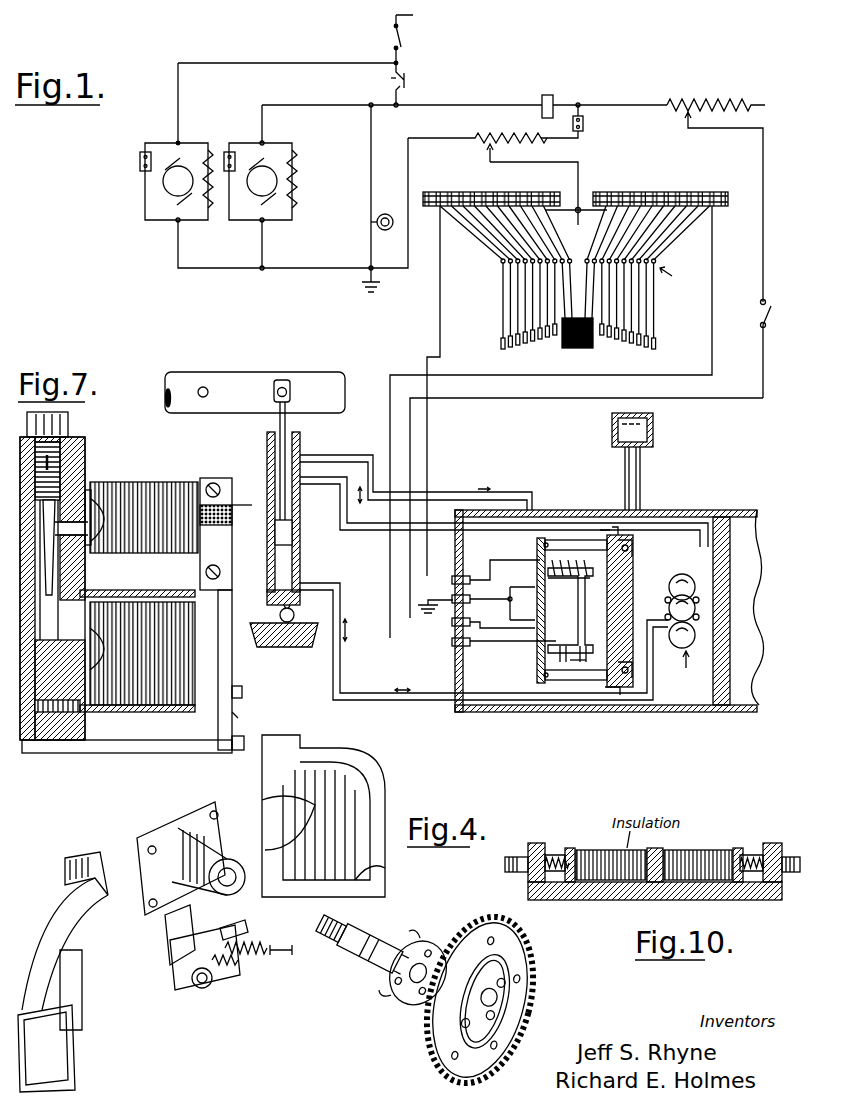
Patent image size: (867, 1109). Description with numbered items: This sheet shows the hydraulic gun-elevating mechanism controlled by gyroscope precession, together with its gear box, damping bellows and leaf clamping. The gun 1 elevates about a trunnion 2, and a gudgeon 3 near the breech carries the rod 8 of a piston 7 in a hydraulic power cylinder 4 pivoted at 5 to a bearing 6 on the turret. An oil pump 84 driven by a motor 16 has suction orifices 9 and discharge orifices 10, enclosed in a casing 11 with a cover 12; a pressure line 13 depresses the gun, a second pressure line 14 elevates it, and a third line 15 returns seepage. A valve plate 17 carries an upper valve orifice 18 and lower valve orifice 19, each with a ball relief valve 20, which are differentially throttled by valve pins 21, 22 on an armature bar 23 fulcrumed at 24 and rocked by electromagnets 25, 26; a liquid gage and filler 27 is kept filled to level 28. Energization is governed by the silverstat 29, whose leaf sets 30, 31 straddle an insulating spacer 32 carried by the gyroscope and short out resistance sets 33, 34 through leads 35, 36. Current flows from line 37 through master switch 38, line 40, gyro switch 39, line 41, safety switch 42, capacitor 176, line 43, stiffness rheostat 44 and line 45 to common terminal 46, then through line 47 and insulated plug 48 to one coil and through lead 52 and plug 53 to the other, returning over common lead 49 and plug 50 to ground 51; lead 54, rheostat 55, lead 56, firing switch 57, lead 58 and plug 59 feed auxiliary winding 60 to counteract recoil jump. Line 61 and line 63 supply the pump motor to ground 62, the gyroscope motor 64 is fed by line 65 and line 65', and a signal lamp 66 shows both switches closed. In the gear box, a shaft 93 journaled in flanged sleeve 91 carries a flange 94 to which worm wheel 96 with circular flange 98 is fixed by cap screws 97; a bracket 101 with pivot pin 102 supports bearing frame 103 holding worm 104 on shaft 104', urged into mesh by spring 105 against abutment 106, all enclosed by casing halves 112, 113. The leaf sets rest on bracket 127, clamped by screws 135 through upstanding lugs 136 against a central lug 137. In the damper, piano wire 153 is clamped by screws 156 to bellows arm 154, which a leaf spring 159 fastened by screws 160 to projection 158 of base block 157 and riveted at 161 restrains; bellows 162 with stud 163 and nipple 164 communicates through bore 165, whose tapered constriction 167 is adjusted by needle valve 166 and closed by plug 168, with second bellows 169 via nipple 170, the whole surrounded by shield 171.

In FIG. 1, the gun 1 is at (250, 373).
In FIG. 1, the trunnion 2 is at (208, 392).
In FIG. 1, the gudgeon 3 is at (290, 392).
In FIG. 1, the hydraulic power cylinder 4 is at (302, 566).
In FIG. 1, the pivot 5 is at (295, 613).
In FIG. 1, the bearing 6 is at (268, 634).
In FIG. 1, the piston 7 is at (293, 531).
In FIG. 1, the rod 8 is at (278, 421).
In FIG. 1, the suction orifices 9 is at (672, 585).
In FIG. 1, the discharge orifices 10 is at (670, 606).
In FIG. 1, the casing 11 is at (651, 716).
In FIG. 1, the cover 12 is at (455, 668).
In FIG. 1, the pressure line 13 is at (428, 698).
In FIG. 1, the second pressure line 14 is at (348, 532).
In FIG. 1, the third line 15 is at (449, 498).
In FIG. 1, the motor 16 is at (170, 185).
In FIG. 1, the valve plate 17 is at (634, 563).
In FIG. 1, the upper valve orifice 18 is at (622, 545).
In FIG. 1, the lower valve orifice 19 is at (615, 688).
In FIG. 1, the ball relief valve 20 is at (629, 547).
In FIG. 1, the valve pin 21 is at (572, 538).
In FIG. 1, the valve pin 22 is at (540, 679).
In FIG. 1, the armature bar 23 is at (537, 545).
In FIG. 1, the fulcrum 24 is at (545, 615).
In FIG. 1, the electromagnet 25 is at (545, 568).
In FIG. 1, the electromagnet 26 is at (555, 655).
In FIG. 1, the liquid gage and filler 27 is at (605, 435).
In FIG. 1, the liquid level 28 is at (650, 424).
In FIG. 1, the silverstat 29 is at (677, 279).
In FIG. 1, the leaves 30 is at (517, 293).
In FIG. 4, the leaves 30 is at (715, 848).
In FIG. 1, the leaves 31 is at (638, 323).
In FIG. 4, the leaves 31 is at (591, 848).
In FIG. 1, the insulating spacer 32 is at (573, 349).
In FIG. 1, the resistance set 33 is at (479, 182).
In FIG. 1, the resistance set 34 is at (650, 186).
In FIG. 1, the leads 35 is at (483, 233).
In FIG. 1, the leads 36 is at (660, 235).
In FIG. 1, the line 37 is at (413, 15).
In FIG. 1, the master switch 38 is at (393, 42).
In FIG. 1, the gyro switch 39 is at (407, 78).
In FIG. 1, the line 40 is at (393, 74).
In FIG. 1, the line 41 is at (484, 105).
In FIG. 1, the safety switch 42 is at (548, 95).
In FIG. 1, the line 43 is at (549, 140).
In FIG. 1, the stiffness control rheostat 44 is at (500, 135).
In FIG. 1, the line 45 is at (580, 173).
In FIG. 1, the common terminal 46 is at (576, 225).
In FIG. 1, the line 47 is at (438, 331).
In FIG. 1, the insulated plug 48 is at (453, 577).
In FIG. 1, the common lead 49 is at (490, 598).
In FIG. 1, the plug 50 is at (466, 602).
In FIG. 1, the ground 51 is at (435, 598).
In FIG. 1, the lead 52 is at (714, 357).
In FIG. 1, the plug 53 is at (466, 645).
In FIG. 1, the lead 54 is at (634, 105).
In FIG. 1, the adjustable rheostat 55 is at (707, 100).
In FIG. 1, the lead 56 is at (762, 244).
In FIG. 1, the switch 57 is at (771, 294).
In FIG. 1, the lead 58 is at (478, 398).
In FIG. 1, the plug 59 is at (453, 625).
In FIG. 1, the auxiliary winding 60 is at (578, 662).
In FIG. 1, the line 61 is at (203, 65).
In FIG. 1, the ground connection 62 is at (362, 287).
In FIG. 1, the line 63 is at (217, 268).
In FIG. 1, the gyroscope motor 64 is at (254, 185).
In FIG. 1, the line 65 is at (330, 111).
In FIG. 1, the line 65' is at (279, 244).
In FIG. 1, the signal lamp 66 is at (382, 212).
In FIG. 1, the oil pump 84 is at (696, 667).
In FIG. 10, the flanged sleeve 91 is at (192, 870).
In FIG. 10, the shaft 93 is at (360, 940).
In FIG. 10, the flange 94 is at (405, 993).
In FIG. 10, the worm wheel 96 is at (422, 1056).
In FIG. 10, the cap screws 97 is at (505, 1013).
In FIG. 10, the circular flange 98 is at (485, 1062).
In FIG. 10, the bracket 101 is at (192, 942).
In FIG. 10, the pivot pin 102 is at (177, 973).
In FIG. 10, the bearing frame 103 is at (207, 988).
In FIG. 10, the worm 104 is at (246, 968).
In FIG. 10, the shaft 104' is at (244, 982).
In FIG. 10, the spring 105 is at (264, 952).
In FIG. 10, the abutment 106 is at (226, 926).
In FIG. 10, the casing half 112 is at (72, 1056).
In FIG. 10, the casing half 113 is at (372, 795).
In FIG. 4, the bracket 127 is at (587, 903).
In FIG. 4, the clamping screws 135 is at (553, 855).
In FIG. 4, the upstanding lugs 136 is at (770, 843).
In FIG. 4, the central lug 137 is at (655, 882).
In FIG. 7, the piano wire 153 is at (246, 503).
In FIG. 7, the bellows arm 154 is at (228, 532).
In FIG. 7, the screws 156 is at (213, 483).
In FIG. 7, the base block 157 is at (85, 450).
In FIG. 7, the projection 158 is at (148, 745).
In FIG. 7, the leaf spring 159 is at (238, 718).
In FIG. 7, the screws 160 is at (244, 742).
In FIG. 7, the rivet 161 is at (243, 692).
In FIG. 7, the bellows 162 is at (143, 481).
In FIG. 7, the stud 163 is at (232, 521).
In FIG. 7, the nipple 164 is at (75, 490).
In FIG. 7, the bore 165 is at (70, 580).
In FIG. 7, the needle valve 166 is at (62, 478).
In FIG. 7, the tapered constriction 167 is at (95, 592).
In FIG. 7, the plug 168 is at (68, 427).
In FIG. 7, the second bellows 169 is at (125, 702).
In FIG. 7, the nipple 170 is at (65, 662).
In FIG. 7, the shield 171 is at (175, 710).
In FIG. 1, the capacitor 176 is at (585, 124).